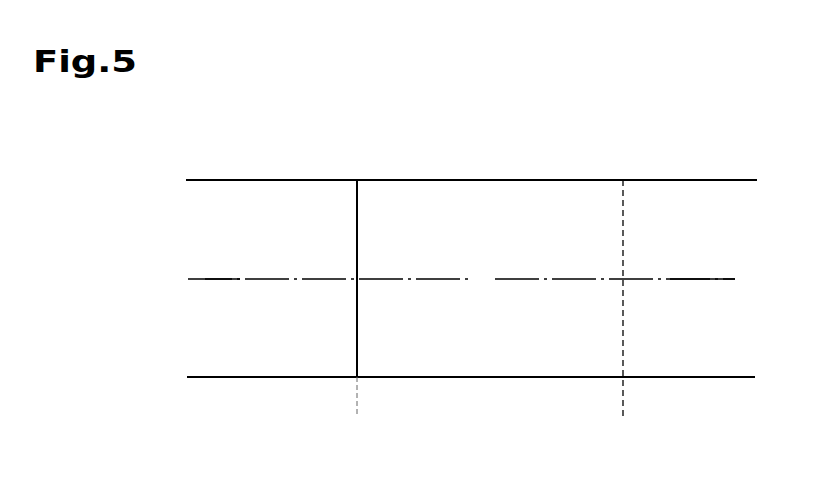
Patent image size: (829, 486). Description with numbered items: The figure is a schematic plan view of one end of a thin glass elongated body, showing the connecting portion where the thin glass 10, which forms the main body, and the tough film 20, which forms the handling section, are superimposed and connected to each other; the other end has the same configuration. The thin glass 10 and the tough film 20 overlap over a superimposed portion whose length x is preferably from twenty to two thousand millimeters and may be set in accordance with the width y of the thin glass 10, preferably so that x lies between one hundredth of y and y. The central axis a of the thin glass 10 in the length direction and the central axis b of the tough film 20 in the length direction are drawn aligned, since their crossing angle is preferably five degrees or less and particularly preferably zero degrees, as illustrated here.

The thin glass 10 is at (623, 425).
The tough film 20 is at (773, 160).
The central axis of the thin glass a is at (220, 277).
The central axis of the tough film b is at (690, 278).
The length of the superimposed portion x is at (623, 405).
The width of the thin glass y is at (744, 180).